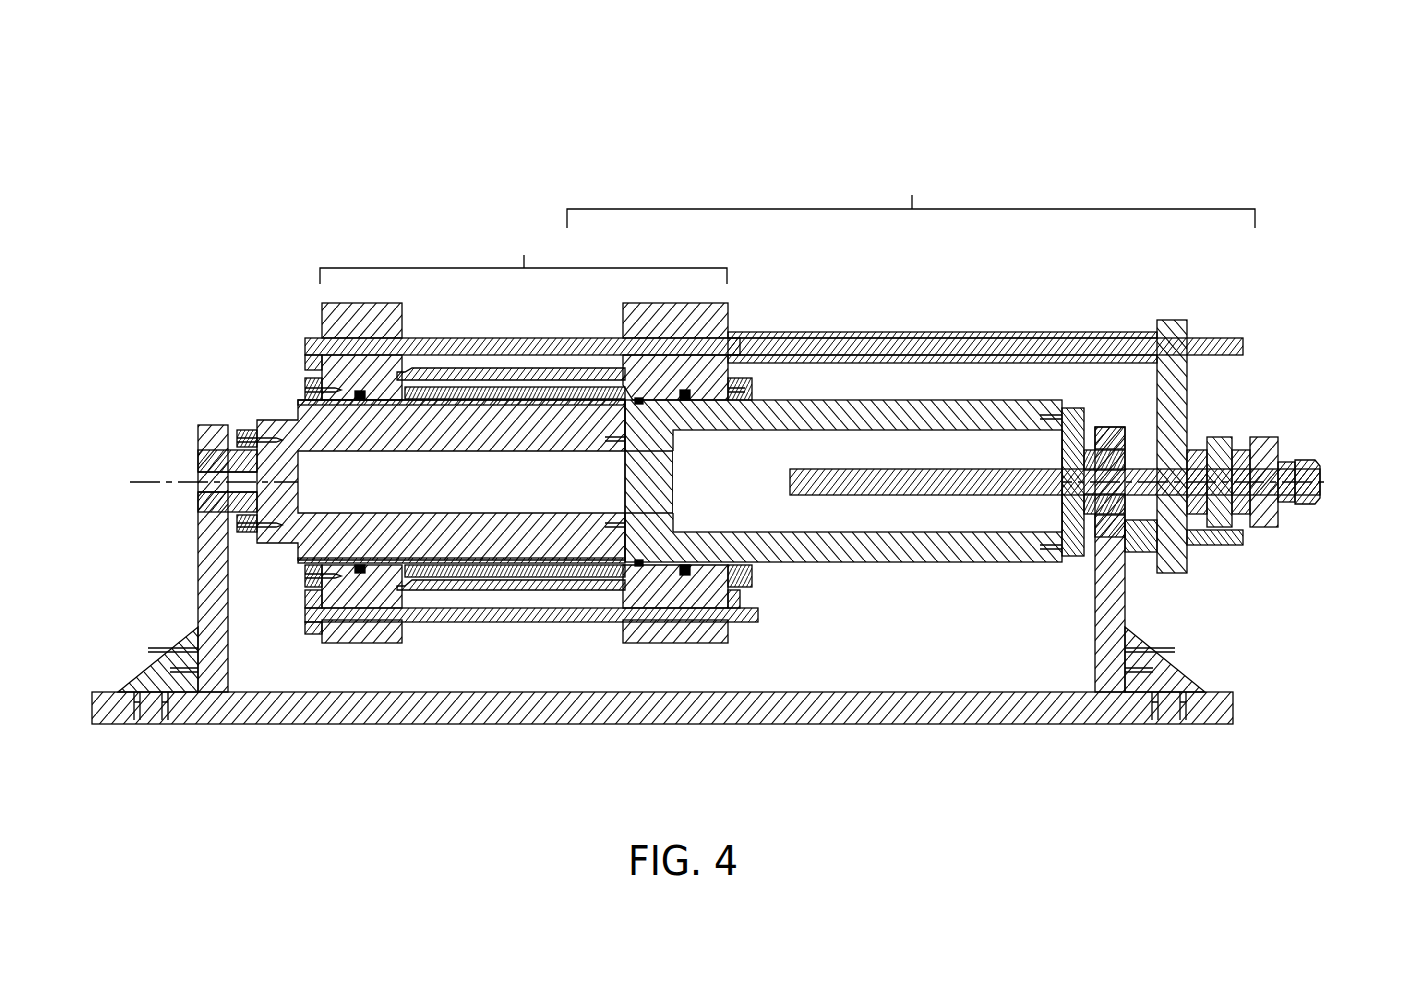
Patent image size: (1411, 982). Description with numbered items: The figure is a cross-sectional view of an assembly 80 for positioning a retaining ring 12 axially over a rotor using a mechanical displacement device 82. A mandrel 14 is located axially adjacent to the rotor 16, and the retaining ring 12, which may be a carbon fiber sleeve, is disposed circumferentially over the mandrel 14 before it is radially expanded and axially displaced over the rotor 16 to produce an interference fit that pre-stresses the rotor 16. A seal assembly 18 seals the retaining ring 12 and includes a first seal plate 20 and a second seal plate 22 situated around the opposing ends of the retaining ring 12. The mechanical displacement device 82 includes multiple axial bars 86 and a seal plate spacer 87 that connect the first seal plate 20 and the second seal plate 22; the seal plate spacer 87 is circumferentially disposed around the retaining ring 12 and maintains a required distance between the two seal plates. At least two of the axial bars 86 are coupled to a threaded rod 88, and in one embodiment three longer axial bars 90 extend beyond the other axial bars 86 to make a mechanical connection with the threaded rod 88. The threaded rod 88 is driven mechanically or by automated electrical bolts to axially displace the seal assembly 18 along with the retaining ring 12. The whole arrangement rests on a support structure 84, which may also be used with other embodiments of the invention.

The retaining ring 12 is at (522, 568).
The mandrel 14 is at (702, 425).
The rotor 16 is at (395, 437).
The seal assembly 18 is at (523, 254).
The first seal plate 20 is at (332, 332).
The second seal plate 22 is at (625, 322).
The assembly 80 is at (1282, 100).
The mechanical displacement device 82 is at (911, 196).
The support structure 84 is at (720, 726).
The axial bars 86 is at (300, 612).
The seal plate spacer 87 is at (474, 587).
The threaded rod 88 is at (951, 476).
The longer axial bars 90 is at (886, 346).